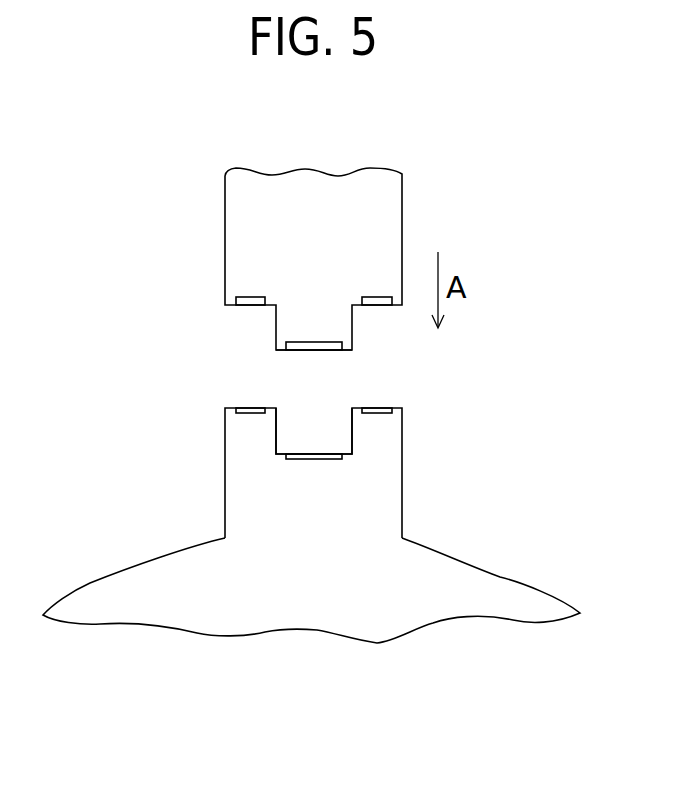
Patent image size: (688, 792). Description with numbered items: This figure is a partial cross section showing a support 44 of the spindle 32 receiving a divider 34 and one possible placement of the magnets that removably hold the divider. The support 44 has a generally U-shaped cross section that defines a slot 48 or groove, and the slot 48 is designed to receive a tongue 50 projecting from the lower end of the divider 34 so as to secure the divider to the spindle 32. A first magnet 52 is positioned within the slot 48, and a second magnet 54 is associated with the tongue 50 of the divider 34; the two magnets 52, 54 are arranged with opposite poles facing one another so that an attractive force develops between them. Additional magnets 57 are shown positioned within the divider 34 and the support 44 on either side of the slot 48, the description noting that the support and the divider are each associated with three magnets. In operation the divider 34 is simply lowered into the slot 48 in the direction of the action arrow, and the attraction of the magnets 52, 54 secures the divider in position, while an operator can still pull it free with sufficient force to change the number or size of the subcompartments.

The divider 34 is at (402, 222).
The plating pads 57 is at (276, 323).
The second magnet 54 is at (310, 350).
The tongue 50 is at (346, 350).
The support 44 is at (402, 485).
The slot 48 is at (308, 427).
The first magnet 52 is at (308, 459).
The spindle 32 is at (121, 584).